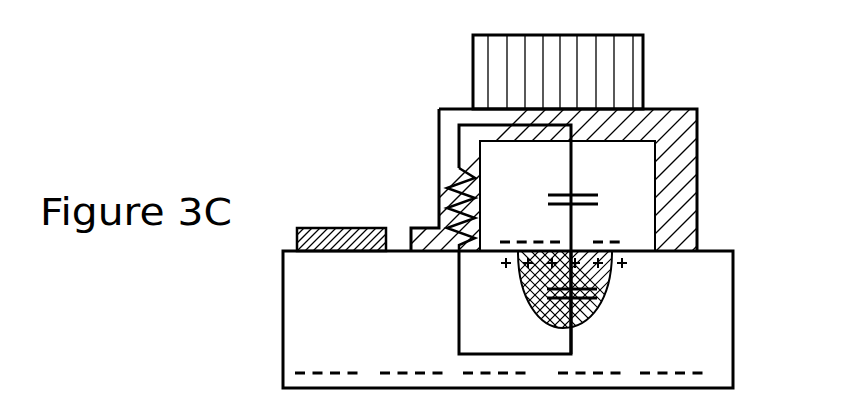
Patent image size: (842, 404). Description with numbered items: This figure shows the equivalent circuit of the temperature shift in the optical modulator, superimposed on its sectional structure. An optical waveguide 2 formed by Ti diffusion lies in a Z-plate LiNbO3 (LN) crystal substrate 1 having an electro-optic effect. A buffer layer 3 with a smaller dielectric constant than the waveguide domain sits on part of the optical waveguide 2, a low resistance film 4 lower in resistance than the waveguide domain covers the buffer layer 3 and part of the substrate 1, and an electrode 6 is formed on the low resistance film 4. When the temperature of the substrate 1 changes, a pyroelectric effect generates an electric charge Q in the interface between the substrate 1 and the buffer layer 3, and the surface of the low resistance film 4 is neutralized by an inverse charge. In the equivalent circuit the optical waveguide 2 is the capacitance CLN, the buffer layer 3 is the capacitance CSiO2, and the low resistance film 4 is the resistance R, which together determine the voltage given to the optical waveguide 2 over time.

The substrate 1 is at (733, 278).
The optical waveguide 2 is at (593, 308).
The buffer layer 3 is at (652, 128).
The low resistance film 4 is at (698, 197).
The electrode 6 is at (645, 70).